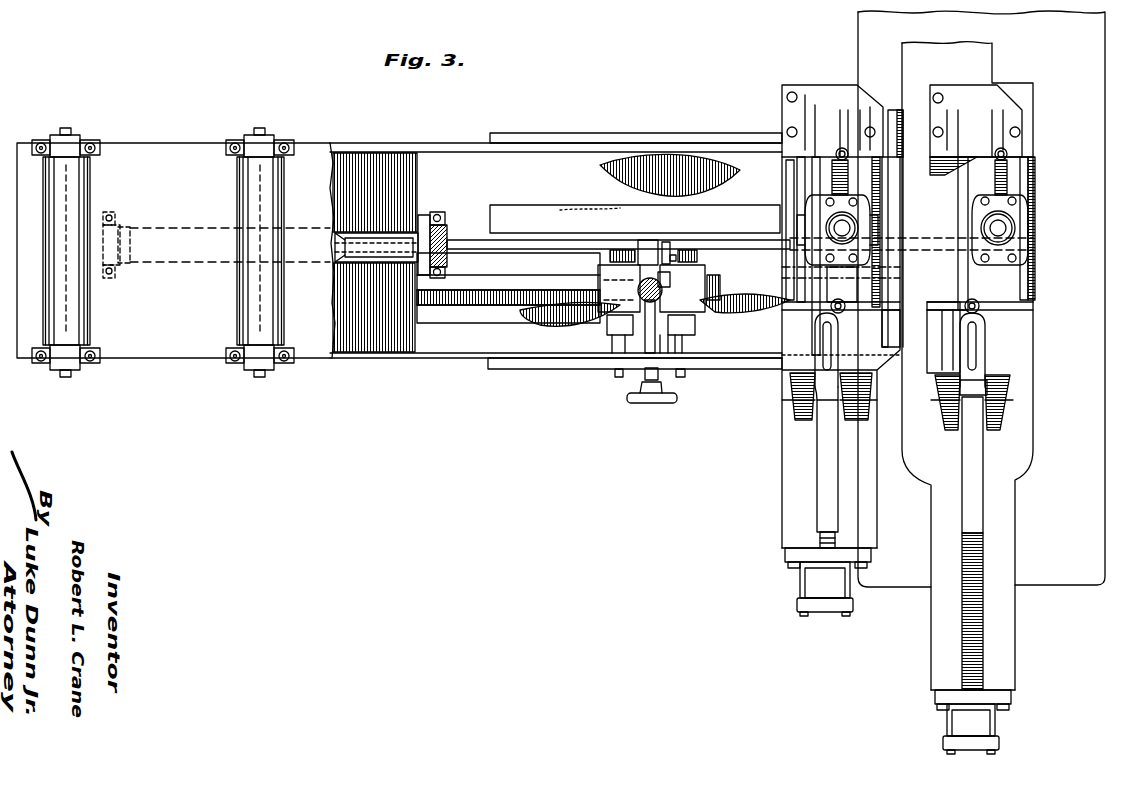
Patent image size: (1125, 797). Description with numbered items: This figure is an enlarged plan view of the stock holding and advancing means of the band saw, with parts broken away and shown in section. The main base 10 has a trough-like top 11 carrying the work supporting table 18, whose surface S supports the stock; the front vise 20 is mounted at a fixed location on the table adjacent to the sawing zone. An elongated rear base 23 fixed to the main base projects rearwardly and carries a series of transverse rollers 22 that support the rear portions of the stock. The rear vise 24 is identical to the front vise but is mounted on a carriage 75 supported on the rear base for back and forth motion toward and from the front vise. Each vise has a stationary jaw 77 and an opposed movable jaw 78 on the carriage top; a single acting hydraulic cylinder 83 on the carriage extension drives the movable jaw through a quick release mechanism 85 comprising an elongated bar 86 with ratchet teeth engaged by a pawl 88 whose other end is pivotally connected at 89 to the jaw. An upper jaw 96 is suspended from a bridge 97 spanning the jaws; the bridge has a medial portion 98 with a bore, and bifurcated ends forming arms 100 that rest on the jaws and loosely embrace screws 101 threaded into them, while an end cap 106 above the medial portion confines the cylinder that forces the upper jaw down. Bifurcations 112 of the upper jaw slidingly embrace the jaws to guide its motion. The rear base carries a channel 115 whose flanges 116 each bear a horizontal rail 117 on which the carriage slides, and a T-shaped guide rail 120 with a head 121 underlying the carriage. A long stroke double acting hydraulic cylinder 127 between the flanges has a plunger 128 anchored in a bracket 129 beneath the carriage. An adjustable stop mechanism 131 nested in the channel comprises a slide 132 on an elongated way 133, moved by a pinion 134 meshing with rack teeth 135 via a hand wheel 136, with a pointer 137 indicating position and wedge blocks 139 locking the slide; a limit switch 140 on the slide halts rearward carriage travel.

The main base 10 is at (887, 607).
The trough-like top 11 is at (1055, 585).
The work supporting table 18 is at (988, 70).
The front vise 20 is at (1040, 140).
The transverse rollers 22 is at (92, 182).
The rear base 23 is at (332, 363).
The rear vise 24 is at (778, 112).
The carriage 75 is at (792, 254).
The stationary jaw 77 is at (828, 97).
The movable jaw 78 is at (792, 362).
The hydraulic cylinder 83 is at (822, 585).
The quick release mechanism 85 is at (803, 460).
The bar 86 is at (835, 548).
The pawl 88 is at (836, 480).
The pivotal connection 89 is at (840, 403).
The upper jaw 96 is at (965, 195).
The bridge 97 is at (850, 284).
The medial portion 98 is at (866, 232).
The arms 100 is at (816, 190).
The screws 101 is at (842, 148).
The end cap 106 is at (826, 235).
The bifurcations 112 is at (820, 203).
The channel 115 is at (378, 348).
The flanges 116 is at (444, 146).
The horizontal rail 117 is at (560, 136).
The guide rail 120 is at (530, 217).
The head 121 is at (578, 218).
The hydraulic cylinder 127 is at (338, 215).
The plunger 128 is at (448, 240).
The bracket 129 is at (880, 268).
The adjustable stop mechanism 131 is at (684, 260).
The slide 132 is at (608, 262).
The way 133 is at (496, 285).
The pinion 134 is at (610, 288).
The rack teeth 135 is at (443, 305).
The hand wheel 136 is at (645, 405).
The pointer 137 is at (662, 382).
The wedge blocks 139 is at (607, 353).
The limit switch 140 is at (652, 278).
The work supporting surface S is at (938, 233).